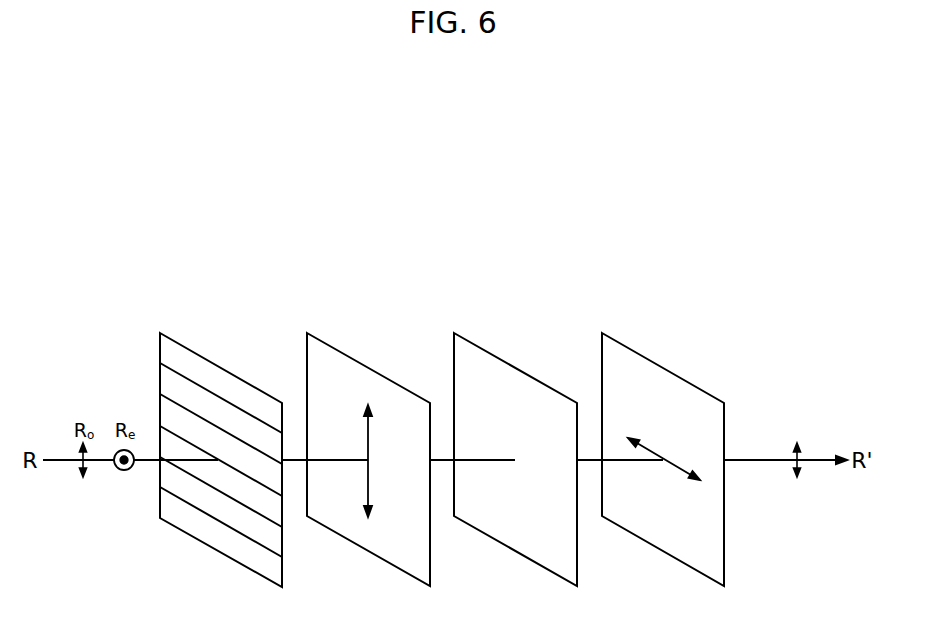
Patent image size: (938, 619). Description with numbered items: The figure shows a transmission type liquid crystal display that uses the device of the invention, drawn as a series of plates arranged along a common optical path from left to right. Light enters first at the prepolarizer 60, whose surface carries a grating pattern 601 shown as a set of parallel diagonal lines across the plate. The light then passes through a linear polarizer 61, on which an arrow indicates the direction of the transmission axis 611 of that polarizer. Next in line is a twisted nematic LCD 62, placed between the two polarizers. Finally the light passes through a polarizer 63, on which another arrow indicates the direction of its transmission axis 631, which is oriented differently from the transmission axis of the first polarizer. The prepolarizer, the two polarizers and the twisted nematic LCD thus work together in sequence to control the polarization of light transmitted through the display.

The prepolarizer 60 is at (227, 370).
The grating pattern of the prepolarizer 601 is at (213, 518).
The linear polarizer 61 is at (377, 370).
The direction of transmission axis of the polarizer 611 is at (365, 480).
The twisted nematic LCD 62 is at (523, 370).
The polarizer 63 is at (673, 370).
The direction of transmission axis of the polarizer 631 is at (675, 467).